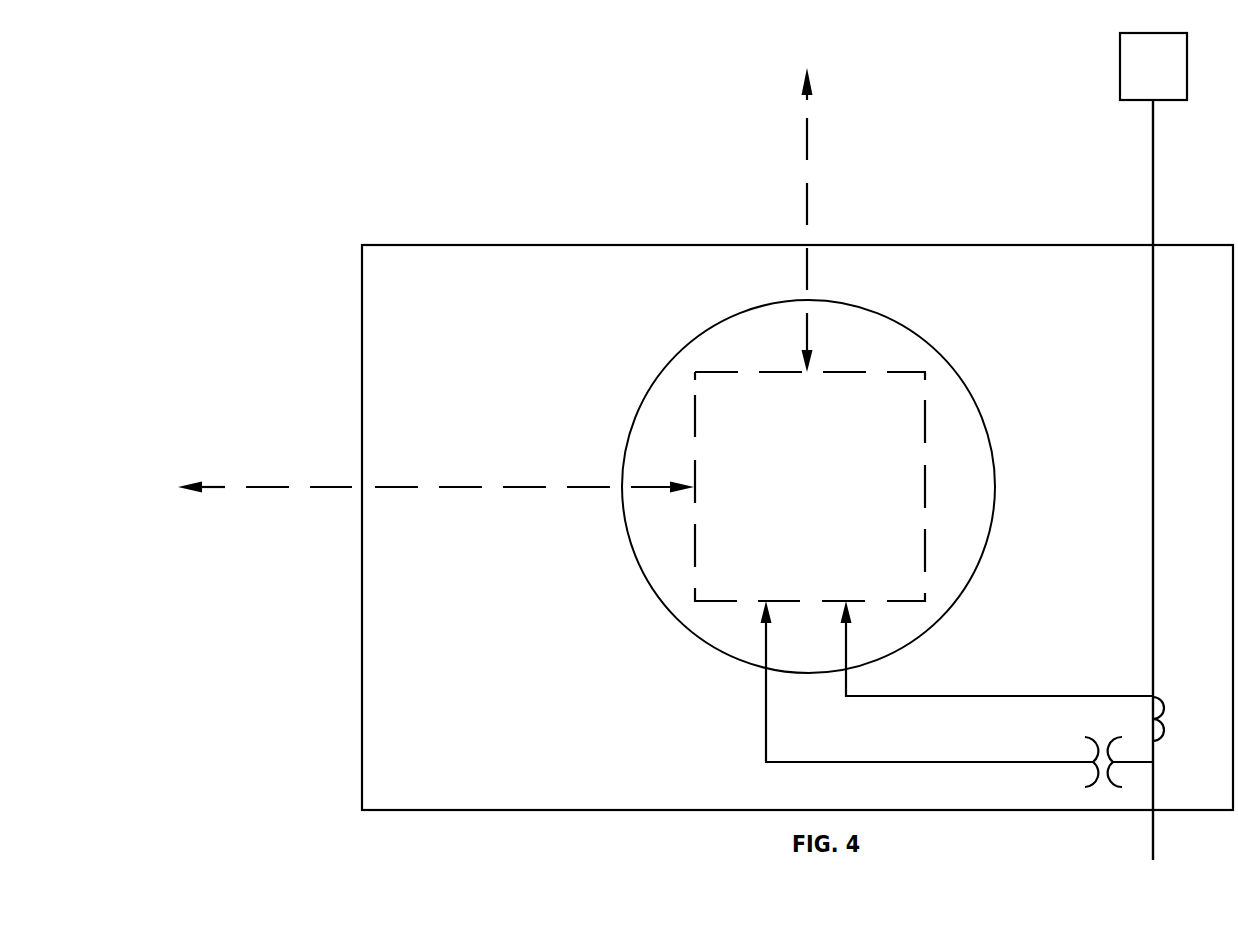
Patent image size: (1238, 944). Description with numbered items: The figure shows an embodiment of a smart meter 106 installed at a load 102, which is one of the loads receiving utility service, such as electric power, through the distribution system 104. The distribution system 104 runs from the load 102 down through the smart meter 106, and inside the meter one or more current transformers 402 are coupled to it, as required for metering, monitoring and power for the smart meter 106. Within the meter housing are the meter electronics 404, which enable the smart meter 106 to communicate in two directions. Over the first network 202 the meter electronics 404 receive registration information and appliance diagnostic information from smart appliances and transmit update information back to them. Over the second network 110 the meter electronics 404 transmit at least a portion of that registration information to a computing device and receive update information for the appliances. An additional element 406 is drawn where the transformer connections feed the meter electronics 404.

The load 102 is at (1153, 66).
The distribution system 104 is at (1115, 480).
The smart meter 106 is at (797, 506).
The second network 110 is at (772, 220).
The first network 202 is at (436, 469).
The current transformer 402 is at (1003, 671).
The meter electronics 404 is at (742, 479).
The fiber connector 406 is at (957, 694).